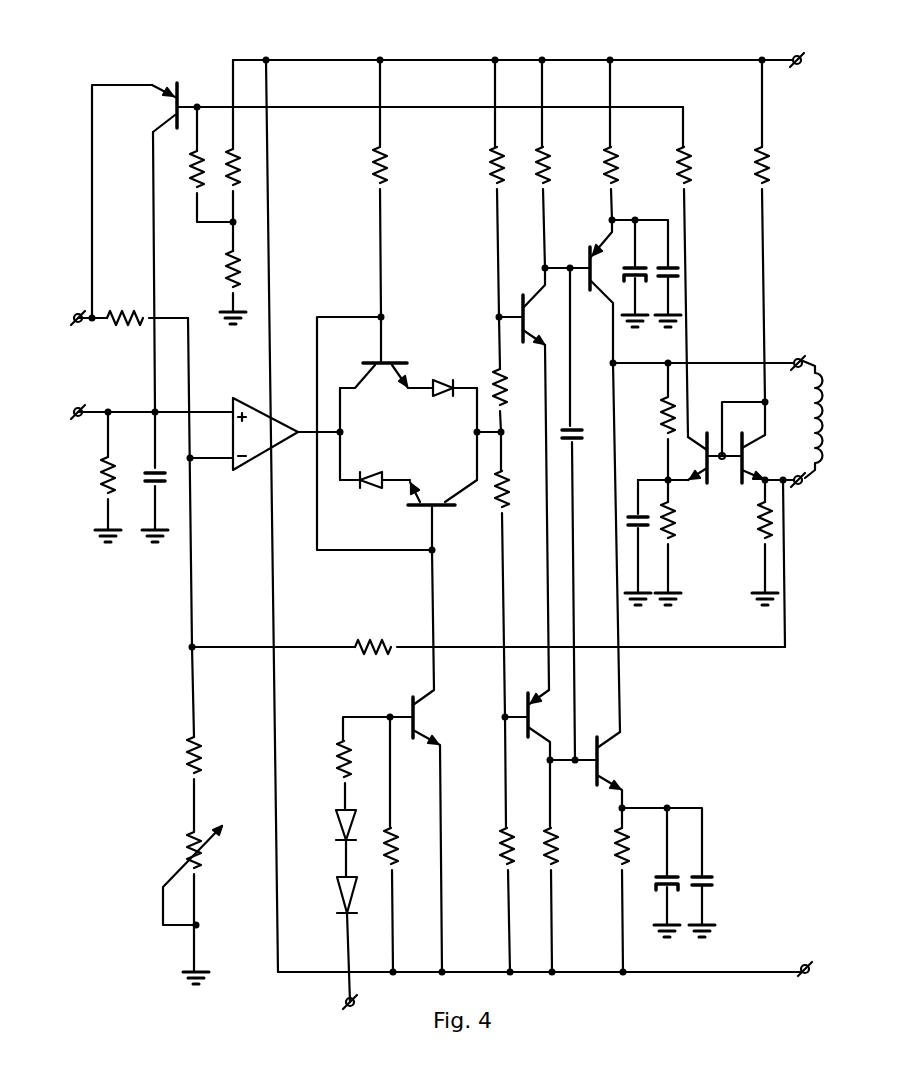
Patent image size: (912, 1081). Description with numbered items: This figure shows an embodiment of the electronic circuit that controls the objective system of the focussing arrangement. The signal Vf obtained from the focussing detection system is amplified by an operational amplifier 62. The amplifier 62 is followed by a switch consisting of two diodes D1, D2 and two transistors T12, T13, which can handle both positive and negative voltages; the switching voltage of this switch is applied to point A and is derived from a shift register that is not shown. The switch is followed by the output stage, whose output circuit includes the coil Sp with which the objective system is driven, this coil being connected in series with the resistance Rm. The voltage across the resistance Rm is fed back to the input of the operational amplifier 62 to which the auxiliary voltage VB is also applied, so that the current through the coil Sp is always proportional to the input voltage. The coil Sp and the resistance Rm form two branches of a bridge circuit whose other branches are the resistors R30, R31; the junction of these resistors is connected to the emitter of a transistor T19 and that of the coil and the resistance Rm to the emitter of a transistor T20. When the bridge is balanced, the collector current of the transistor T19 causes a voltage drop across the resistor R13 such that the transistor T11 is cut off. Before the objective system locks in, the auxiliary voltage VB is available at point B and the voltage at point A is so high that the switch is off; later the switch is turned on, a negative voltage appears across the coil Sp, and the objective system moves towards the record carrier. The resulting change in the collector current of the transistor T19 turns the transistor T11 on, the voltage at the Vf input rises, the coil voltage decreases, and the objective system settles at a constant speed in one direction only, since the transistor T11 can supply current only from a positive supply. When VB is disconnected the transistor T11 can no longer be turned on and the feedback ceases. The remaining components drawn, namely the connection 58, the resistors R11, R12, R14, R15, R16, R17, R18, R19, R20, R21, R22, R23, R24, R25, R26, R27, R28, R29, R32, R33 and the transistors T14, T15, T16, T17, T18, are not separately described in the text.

The transistor T11 is at (172, 107).
The resistor R13 is at (207, 168).
The resistor R16 is at (240, 173).
The resistor R17 is at (229, 272).
The resistor R12 is at (125, 312).
The point B is at (78, 314).
The auxiliary voltage VB is at (80, 325).
The signal Vf is at (82, 409).
The resistor R11 is at (103, 472).
The operational amplifier 62 is at (255, 401).
The transistor T12 is at (377, 360).
The diode D1 is at (440, 378).
The diode D2 is at (373, 470).
The transistor T13 is at (442, 510).
The resistor R21 is at (385, 167).
The resistor R22 is at (502, 167).
The resistor R23 is at (500, 392).
The resistor R24 is at (501, 498).
The resistor R25 is at (512, 837).
The transistor T16 is at (522, 297).
The resistor R26 is at (548, 167).
The transistor T17 is at (587, 253).
The resistor R28 is at (616, 167).
The resistor R32 is at (688, 167).
The resistor R33 is at (766, 167).
The supply terminal 58 is at (793, 55).
The resistor R30 is at (660, 420).
The resistor R31 is at (677, 527).
The transistor T19 is at (706, 432).
The transistor T20 is at (740, 472).
The resistance Rm is at (757, 530).
The coil Sp is at (807, 420).
The resistor R18 is at (370, 640).
The resistor R14 is at (197, 752).
The variable resistor R15 is at (201, 848).
The transistor T14 is at (413, 703).
The resistor R19 is at (335, 750).
The point A is at (356, 1006).
The resistor R20 is at (397, 845).
The transistor T15 is at (528, 697).
The resistor R27 is at (554, 840).
The transistor T18 is at (597, 740).
The resistor R29 is at (617, 858).